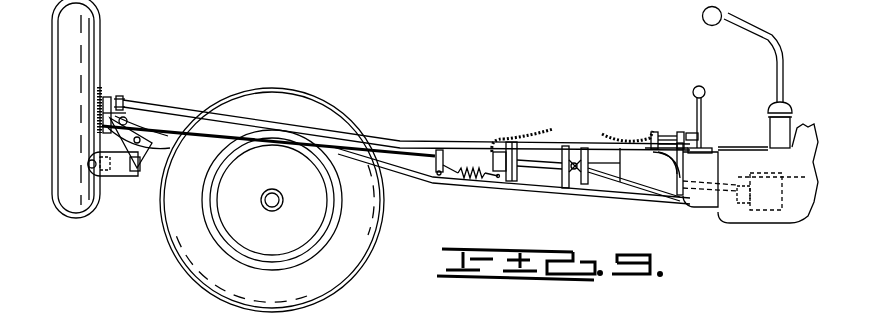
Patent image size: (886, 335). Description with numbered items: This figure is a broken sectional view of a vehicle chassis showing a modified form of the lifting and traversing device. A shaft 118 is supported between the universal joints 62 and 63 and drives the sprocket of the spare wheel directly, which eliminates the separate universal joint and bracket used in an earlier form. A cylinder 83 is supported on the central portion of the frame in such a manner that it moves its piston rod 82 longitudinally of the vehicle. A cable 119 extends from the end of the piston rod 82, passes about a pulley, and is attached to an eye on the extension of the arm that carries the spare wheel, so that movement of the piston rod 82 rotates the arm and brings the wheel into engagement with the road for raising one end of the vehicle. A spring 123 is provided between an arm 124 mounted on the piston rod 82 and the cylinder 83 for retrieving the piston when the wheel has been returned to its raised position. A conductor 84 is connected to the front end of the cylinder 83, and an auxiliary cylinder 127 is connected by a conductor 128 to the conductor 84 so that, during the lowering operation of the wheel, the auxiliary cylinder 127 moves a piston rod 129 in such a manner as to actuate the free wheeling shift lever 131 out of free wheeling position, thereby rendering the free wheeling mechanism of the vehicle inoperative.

The universal joint 62 is at (118, 101).
The shaft 118 is at (214, 103).
The cable 119 is at (393, 146).
The piston rod 82 is at (470, 157).
The cylinder 83 is at (547, 147).
The conductor 84 is at (497, 146).
The conductor 128 is at (609, 131).
The auxiliary cylinder 127 is at (666, 132).
The piston rod 129 is at (698, 128).
The free wheeling shift lever 131 is at (698, 135).
The arm 124 is at (436, 167).
The spring 123 is at (472, 180).
The universal joint 63 is at (737, 210).